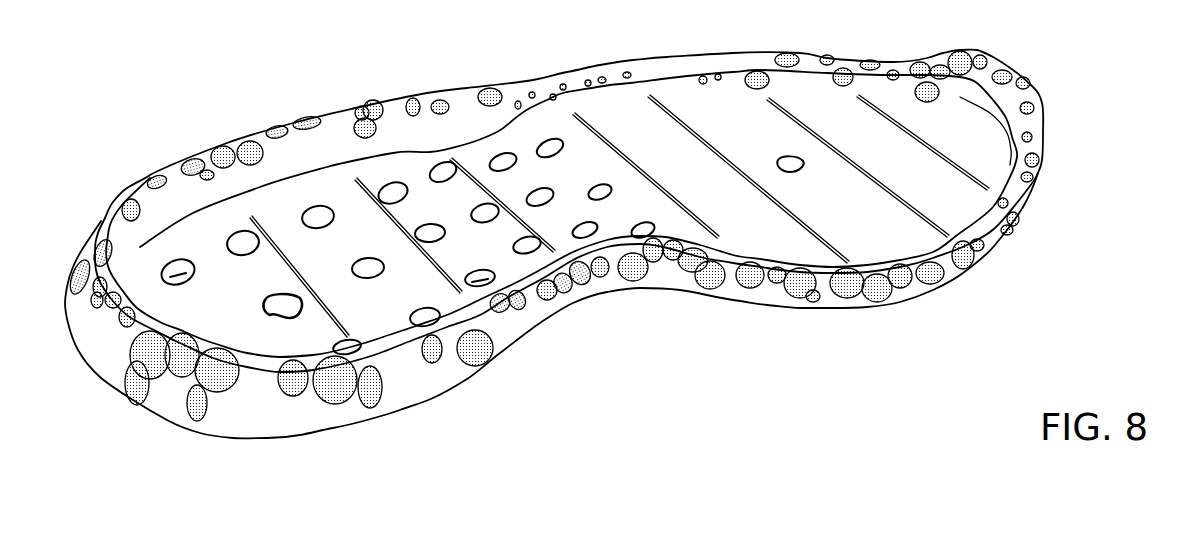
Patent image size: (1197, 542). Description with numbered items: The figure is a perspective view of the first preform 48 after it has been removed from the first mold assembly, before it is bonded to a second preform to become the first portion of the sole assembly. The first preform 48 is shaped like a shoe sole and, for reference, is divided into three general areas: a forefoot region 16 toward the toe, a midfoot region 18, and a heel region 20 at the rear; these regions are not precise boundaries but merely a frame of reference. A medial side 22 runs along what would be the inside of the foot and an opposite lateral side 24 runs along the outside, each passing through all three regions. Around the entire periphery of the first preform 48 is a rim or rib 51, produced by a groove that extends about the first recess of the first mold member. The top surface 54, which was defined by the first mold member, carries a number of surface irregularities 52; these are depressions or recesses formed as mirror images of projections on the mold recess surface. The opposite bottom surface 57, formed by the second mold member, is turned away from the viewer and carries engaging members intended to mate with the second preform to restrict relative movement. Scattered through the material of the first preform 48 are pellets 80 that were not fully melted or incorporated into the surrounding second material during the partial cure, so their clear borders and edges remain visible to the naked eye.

The forefoot region 16 is at (895, 176).
The midfoot region 18 is at (589, 178).
The heel region 20 is at (205, 313).
The medial side 22 is at (767, 297).
The lateral side 24 is at (673, 67).
The first preform 48 is at (1015, 230).
The rim or rib 51 is at (857, 63).
The surface irregularities 52 is at (388, 201).
The top surface 54 is at (308, 270).
The bottom surface 57 is at (437, 394).
The pellets 80 is at (298, 387).